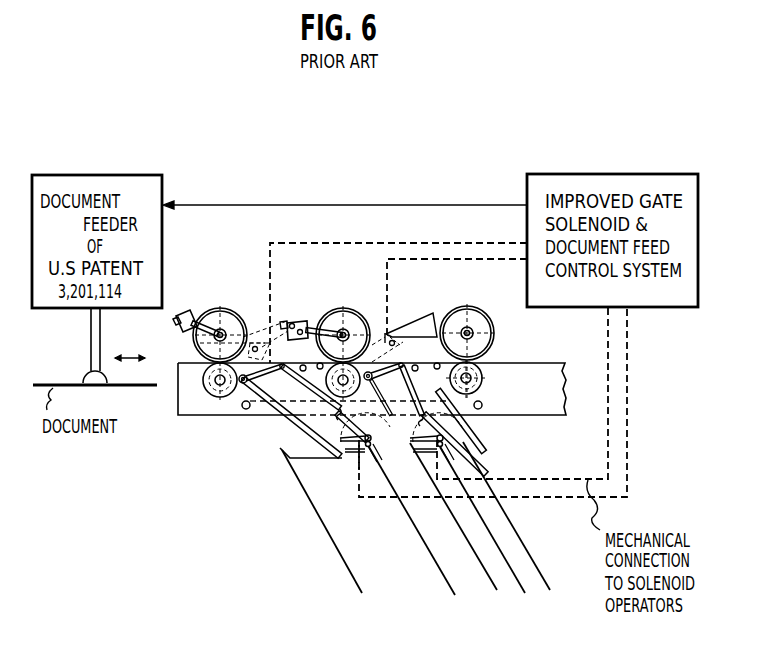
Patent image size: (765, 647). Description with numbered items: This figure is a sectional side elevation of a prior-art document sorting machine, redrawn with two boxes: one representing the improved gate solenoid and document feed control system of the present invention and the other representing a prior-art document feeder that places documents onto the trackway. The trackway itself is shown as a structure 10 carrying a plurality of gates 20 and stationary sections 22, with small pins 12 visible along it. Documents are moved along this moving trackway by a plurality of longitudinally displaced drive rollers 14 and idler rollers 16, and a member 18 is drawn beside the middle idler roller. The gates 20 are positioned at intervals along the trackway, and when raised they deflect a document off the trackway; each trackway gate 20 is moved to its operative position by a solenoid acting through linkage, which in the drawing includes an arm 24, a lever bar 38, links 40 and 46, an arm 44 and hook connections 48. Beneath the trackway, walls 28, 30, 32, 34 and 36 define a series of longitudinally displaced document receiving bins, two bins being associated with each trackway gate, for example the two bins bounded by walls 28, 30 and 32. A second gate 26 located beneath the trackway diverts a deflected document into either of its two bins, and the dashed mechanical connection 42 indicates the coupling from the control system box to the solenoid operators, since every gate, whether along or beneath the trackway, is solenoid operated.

The frame plate 10 is at (534, 362).
The bearing pin 12 is at (243, 410).
The drive rollers 14 is at (212, 393).
The idler rollers 16 is at (245, 311).
The gate 18 is at (413, 329).
The gates 20 is at (269, 380).
The stationary sections 22 is at (318, 362).
The arm 24 is at (468, 438).
The second gate 26 is at (362, 452).
The wall 28 is at (341, 562).
The wall 30 is at (431, 562).
The wall 32 is at (481, 572).
The wall 34 is at (512, 572).
The wall 36 is at (550, 569).
The lever bar 38 is at (292, 424).
The link 40 is at (322, 404).
The mechanical connection 42 is at (370, 470).
The arm 44 is at (478, 463).
The link 46 is at (397, 390).
The hook connection 48 is at (339, 412).